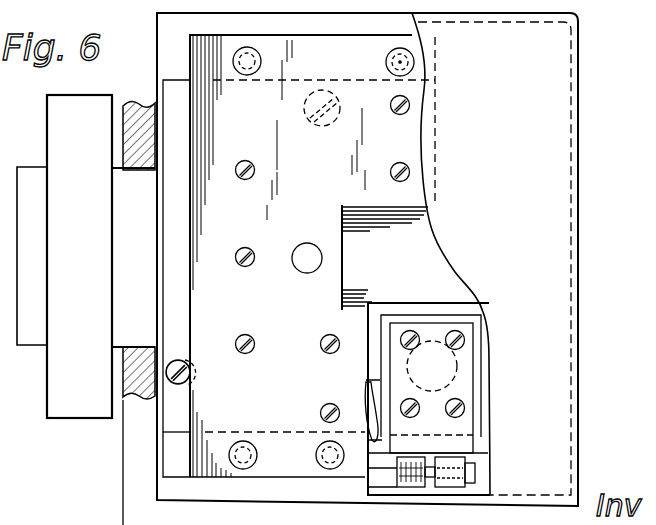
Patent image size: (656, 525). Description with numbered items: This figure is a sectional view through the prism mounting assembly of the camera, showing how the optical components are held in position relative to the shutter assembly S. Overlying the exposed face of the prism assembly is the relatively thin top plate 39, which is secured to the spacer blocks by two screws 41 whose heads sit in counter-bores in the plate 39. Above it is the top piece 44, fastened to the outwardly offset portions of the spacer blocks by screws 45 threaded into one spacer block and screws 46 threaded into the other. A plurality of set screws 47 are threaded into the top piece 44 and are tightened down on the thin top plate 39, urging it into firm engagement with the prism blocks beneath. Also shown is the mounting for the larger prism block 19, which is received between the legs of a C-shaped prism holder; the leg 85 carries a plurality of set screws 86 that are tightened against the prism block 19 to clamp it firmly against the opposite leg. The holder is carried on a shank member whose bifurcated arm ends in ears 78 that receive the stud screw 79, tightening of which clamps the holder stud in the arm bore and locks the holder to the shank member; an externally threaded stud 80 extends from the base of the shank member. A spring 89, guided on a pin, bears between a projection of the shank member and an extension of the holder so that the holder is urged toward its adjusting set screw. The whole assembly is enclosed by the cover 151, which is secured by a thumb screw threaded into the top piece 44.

The prism block 19 is at (484, 322).
The top plate 39 is at (172, 283).
The screws 41 is at (322, 127).
The top piece 44 is at (330, 285).
The screws 45 is at (250, 467).
The screws 46 is at (248, 48).
The set screws 47 is at (400, 163).
The ears 78 is at (462, 460).
The stud screw 79 is at (470, 478).
The externally threaded stud 80 is at (462, 360).
The leg 85 is at (467, 388).
The set screws 86 is at (441, 426).
The spring 89 is at (370, 388).
The cover 151 is at (558, 218).
The shutter assembly S is at (44, 412).